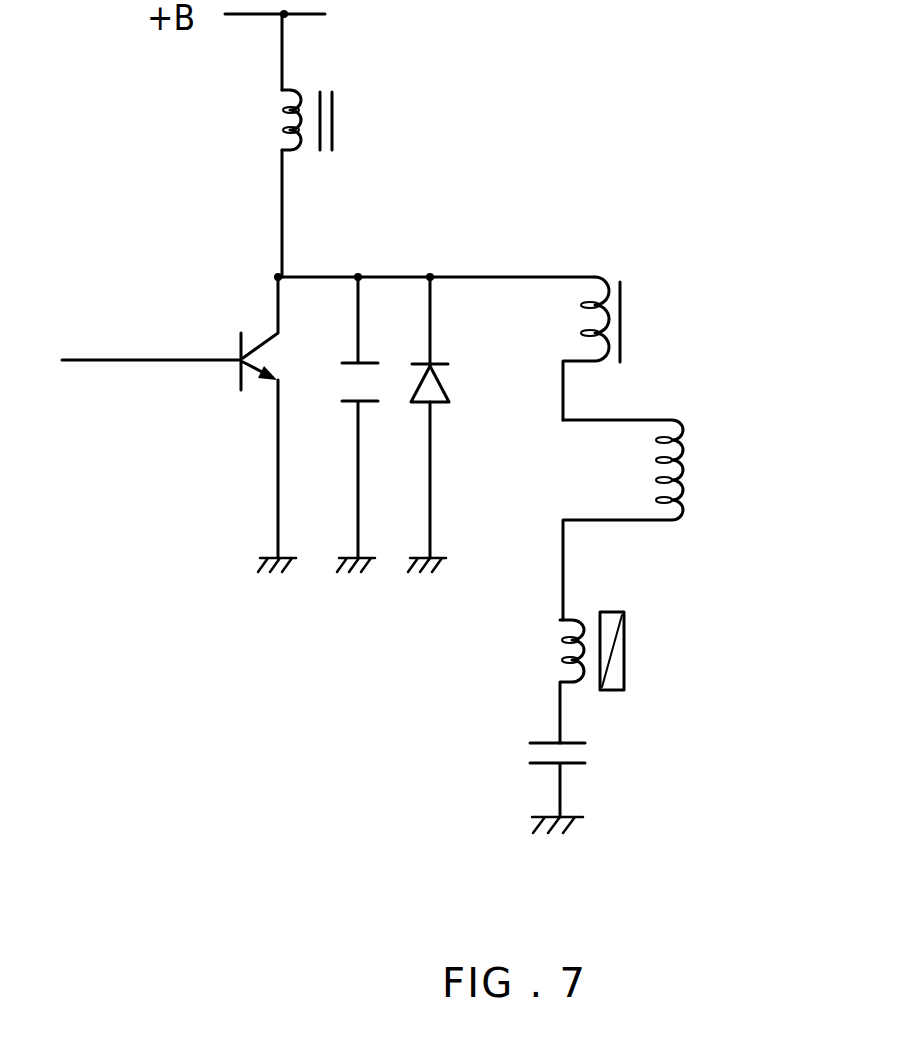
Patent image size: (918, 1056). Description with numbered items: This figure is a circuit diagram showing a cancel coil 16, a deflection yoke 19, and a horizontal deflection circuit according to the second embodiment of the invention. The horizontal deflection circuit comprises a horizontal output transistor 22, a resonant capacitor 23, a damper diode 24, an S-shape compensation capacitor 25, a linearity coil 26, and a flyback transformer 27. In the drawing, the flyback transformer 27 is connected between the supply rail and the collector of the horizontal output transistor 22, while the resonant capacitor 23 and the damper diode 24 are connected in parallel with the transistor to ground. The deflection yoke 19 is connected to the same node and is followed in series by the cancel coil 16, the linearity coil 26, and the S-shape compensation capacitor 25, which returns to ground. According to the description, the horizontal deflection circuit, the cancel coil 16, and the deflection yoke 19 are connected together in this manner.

The flyback transformer 27 is at (337, 109).
The horizontal output transistor 22 is at (233, 393).
The resonant capacitor 23 is at (345, 415).
The damper diode 24 is at (418, 413).
The deflection yoke 19 is at (602, 276).
The cancel coil 16 is at (682, 447).
The linearity coil 26 is at (628, 647).
The S-shape compensation capacitor 25 is at (586, 755).